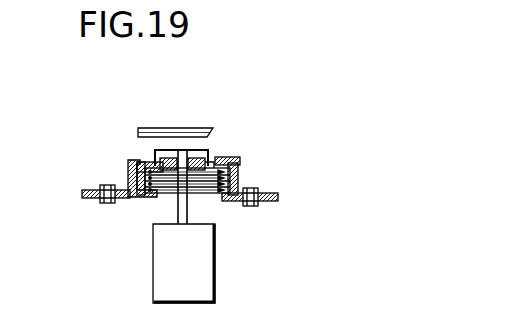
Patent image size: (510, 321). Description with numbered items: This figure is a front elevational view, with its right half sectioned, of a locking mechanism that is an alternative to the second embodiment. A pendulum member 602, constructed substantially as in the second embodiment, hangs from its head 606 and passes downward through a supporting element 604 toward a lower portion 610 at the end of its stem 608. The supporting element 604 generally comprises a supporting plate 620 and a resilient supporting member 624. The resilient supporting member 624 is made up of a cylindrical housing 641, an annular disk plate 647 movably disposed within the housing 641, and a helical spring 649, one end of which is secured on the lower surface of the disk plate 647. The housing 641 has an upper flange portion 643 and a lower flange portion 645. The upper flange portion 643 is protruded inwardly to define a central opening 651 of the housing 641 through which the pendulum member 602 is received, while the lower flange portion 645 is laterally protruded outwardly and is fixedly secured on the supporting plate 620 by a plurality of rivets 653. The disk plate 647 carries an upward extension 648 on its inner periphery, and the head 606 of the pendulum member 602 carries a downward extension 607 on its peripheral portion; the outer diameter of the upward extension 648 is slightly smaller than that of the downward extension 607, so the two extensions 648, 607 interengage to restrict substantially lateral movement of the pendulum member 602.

The pendulum member 602 is at (190, 146).
The supporting element 604 is at (337, 130).
The head 606 is at (209, 158).
The downward extension 607 is at (214, 162).
The shaft 608 is at (177, 226).
The housing 610 is at (204, 262).
The supporting plate 620 is at (259, 206).
The resilient supporting member 624 is at (246, 166).
The cylindrical housing 641 is at (130, 168).
The upper flange portion 643 is at (140, 163).
The lower flange portion 645 is at (95, 200).
The annular disk plate 647 is at (168, 158).
The upward extension 648 is at (178, 158).
The helical spring 649 is at (238, 182).
The central opening 651 is at (242, 158).
The rivets 653 is at (113, 203).